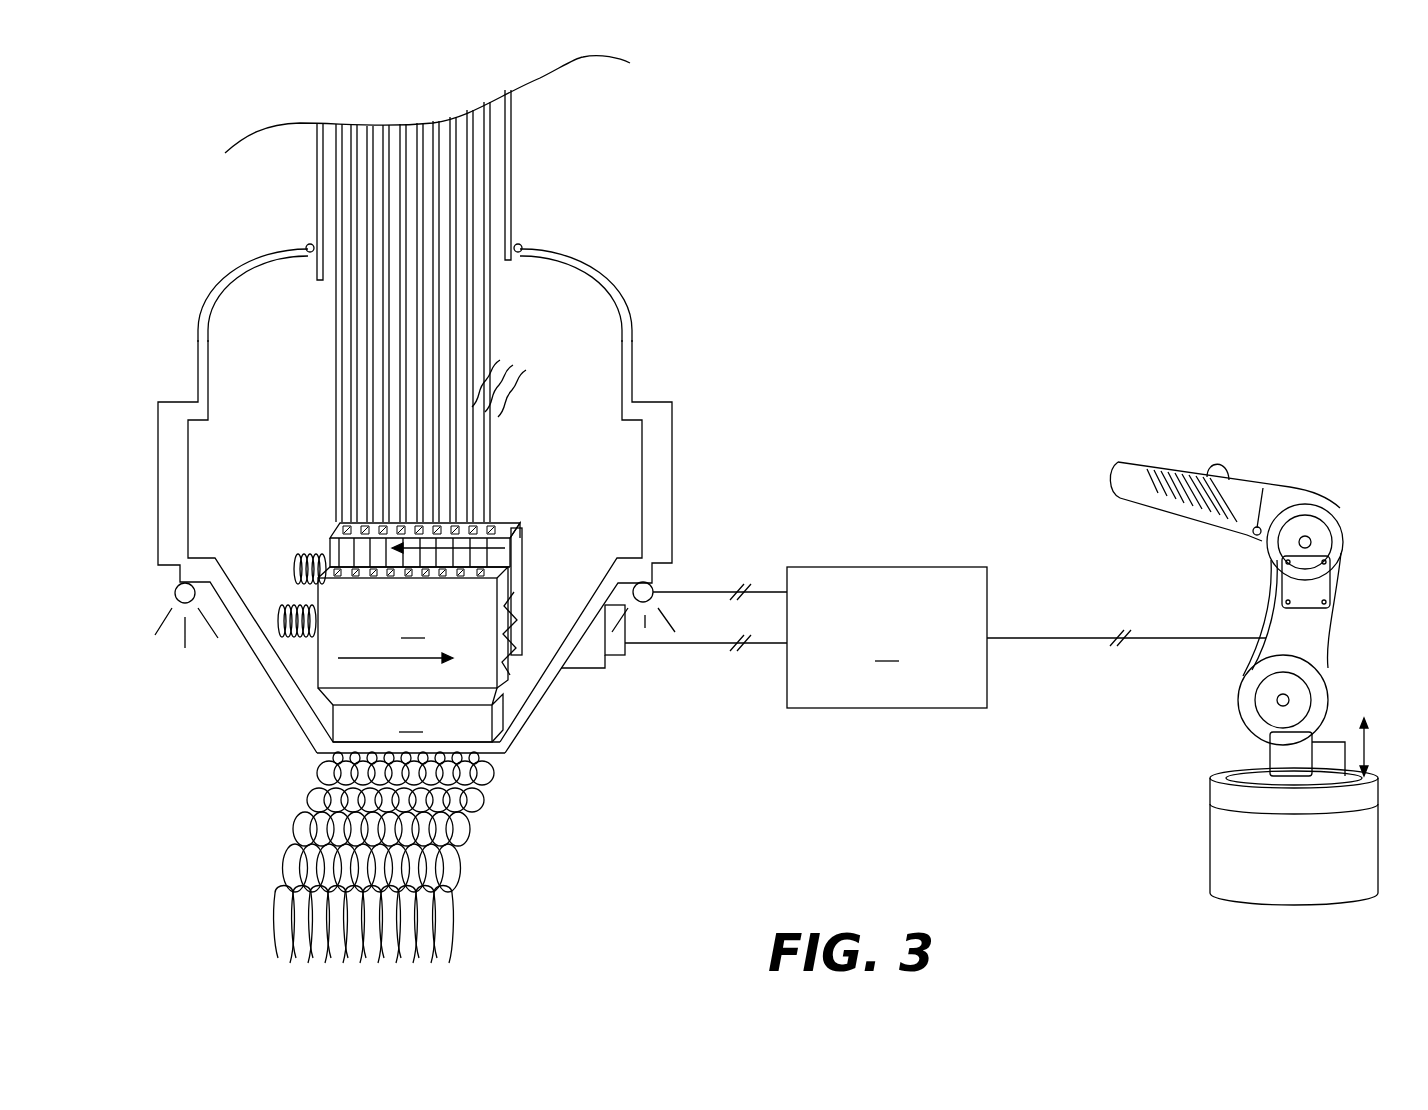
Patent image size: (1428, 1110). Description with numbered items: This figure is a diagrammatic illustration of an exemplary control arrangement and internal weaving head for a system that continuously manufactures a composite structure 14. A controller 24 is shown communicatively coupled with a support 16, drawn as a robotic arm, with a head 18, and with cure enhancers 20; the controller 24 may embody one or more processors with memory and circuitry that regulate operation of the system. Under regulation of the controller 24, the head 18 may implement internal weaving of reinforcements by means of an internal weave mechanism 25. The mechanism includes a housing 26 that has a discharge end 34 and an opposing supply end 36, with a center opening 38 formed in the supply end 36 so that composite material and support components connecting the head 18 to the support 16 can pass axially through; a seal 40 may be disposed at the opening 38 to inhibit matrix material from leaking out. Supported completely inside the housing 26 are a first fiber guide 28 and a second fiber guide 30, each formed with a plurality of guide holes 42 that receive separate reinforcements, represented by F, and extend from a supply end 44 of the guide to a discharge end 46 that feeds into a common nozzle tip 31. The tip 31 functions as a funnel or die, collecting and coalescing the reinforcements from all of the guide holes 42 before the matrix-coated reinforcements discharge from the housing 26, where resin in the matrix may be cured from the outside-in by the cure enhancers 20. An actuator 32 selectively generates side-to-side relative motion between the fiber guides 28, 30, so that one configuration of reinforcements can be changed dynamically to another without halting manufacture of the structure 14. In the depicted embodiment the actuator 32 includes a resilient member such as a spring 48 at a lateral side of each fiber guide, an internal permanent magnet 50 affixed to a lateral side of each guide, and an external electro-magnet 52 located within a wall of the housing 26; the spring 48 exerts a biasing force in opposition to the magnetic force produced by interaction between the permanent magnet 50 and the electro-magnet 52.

The composite structure 14 is at (463, 858).
The support 16 is at (1315, 648).
The head 18 is at (459, 490).
The cure enhancer 20 is at (176, 590).
The controller 24 is at (945, 637).
The internal weave mechanism 25 is at (294, 474).
The housing 26 is at (664, 475).
The first fiber guide 28 is at (505, 521).
The second fiber guide 30 is at (413, 627).
The common nozzle tip 31 is at (410, 715).
The actuator 32 is at (648, 665).
The discharge end 34 is at (524, 760).
The supply end 36 is at (604, 257).
The center opening 38 is at (518, 248).
The seal 40 is at (306, 246).
The guide holes 42 is at (386, 574).
The supply end of fiber guide 44 is at (526, 534).
The discharge end of fiber guide 46 is at (524, 631).
The resilient member 48 is at (312, 556).
The internal magnet 50 is at (516, 591).
The external magnet 52 is at (603, 672).
The reinforcement F is at (500, 384).